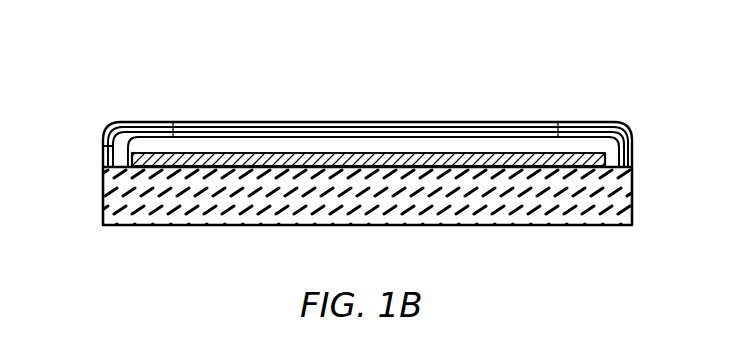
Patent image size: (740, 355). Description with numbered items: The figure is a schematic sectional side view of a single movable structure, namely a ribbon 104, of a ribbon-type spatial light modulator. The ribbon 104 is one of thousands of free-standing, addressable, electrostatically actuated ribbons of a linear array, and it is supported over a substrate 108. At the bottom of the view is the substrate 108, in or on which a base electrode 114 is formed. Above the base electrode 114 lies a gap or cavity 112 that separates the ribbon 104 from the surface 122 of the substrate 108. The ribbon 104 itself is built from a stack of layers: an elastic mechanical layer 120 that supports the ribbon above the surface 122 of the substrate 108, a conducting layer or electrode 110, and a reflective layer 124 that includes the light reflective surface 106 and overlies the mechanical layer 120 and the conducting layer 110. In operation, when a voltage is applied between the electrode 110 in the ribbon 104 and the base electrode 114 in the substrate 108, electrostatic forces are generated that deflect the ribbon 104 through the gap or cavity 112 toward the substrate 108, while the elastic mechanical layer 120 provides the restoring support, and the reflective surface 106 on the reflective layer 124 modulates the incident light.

The ribbon 104 is at (146, 70).
The light reflective surface 106 is at (404, 119).
The substrate 108 is at (380, 204).
The electrode 110 is at (533, 128).
The gap or cavity 112 is at (310, 145).
The base electrode 114 is at (216, 152).
The elastic mechanical layer 120 is at (480, 133).
The surface of the substrate 122 is at (117, 161).
The reflective layer 124 is at (585, 122).